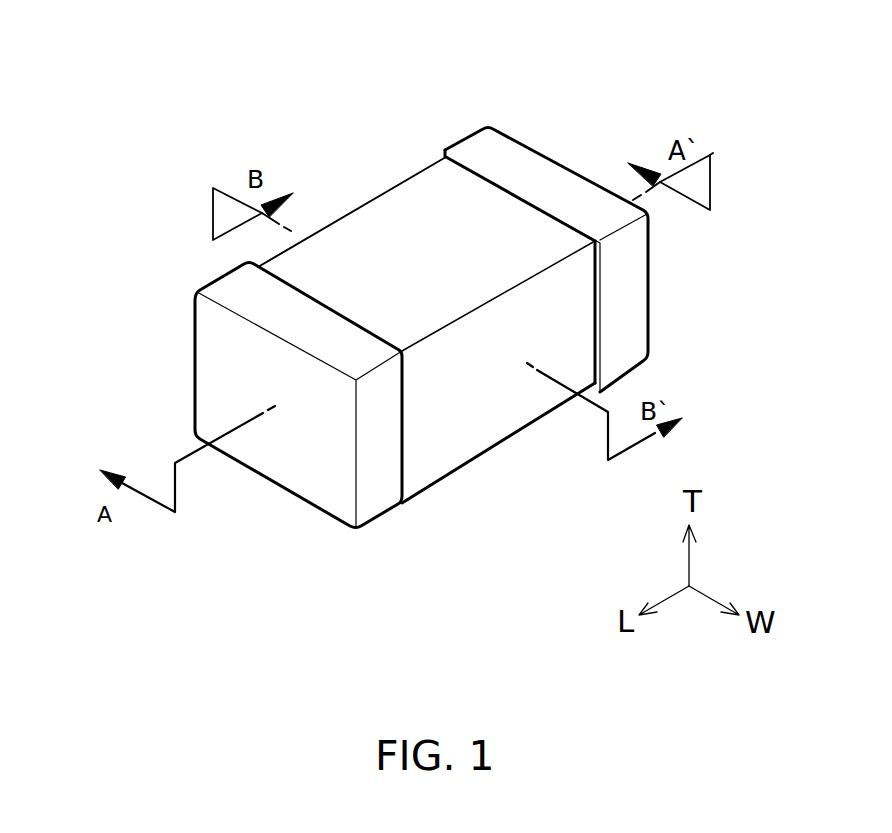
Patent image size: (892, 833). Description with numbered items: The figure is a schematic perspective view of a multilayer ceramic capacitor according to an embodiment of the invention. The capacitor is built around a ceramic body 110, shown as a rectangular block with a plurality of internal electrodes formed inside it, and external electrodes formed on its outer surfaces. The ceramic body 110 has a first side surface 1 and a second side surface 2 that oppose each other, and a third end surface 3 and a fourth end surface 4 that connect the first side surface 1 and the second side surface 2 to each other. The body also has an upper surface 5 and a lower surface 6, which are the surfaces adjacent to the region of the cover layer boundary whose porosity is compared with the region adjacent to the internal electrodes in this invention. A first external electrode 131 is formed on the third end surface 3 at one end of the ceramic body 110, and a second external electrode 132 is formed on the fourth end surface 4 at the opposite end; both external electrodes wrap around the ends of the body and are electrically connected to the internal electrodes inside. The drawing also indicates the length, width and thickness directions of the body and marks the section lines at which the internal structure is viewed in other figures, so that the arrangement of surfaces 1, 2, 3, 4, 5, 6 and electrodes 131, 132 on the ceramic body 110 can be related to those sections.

The first side surface 1 is at (371, 163).
The second side surface 2 is at (512, 413).
The third end surface 3 is at (290, 483).
The fourth end surface 4 is at (585, 143).
The upper surface 5 is at (487, 226).
The lower surface 6 is at (463, 485).
The ceramic body 110 is at (432, 195).
The first external electrode 131 is at (375, 507).
The second external electrode 132 is at (638, 327).